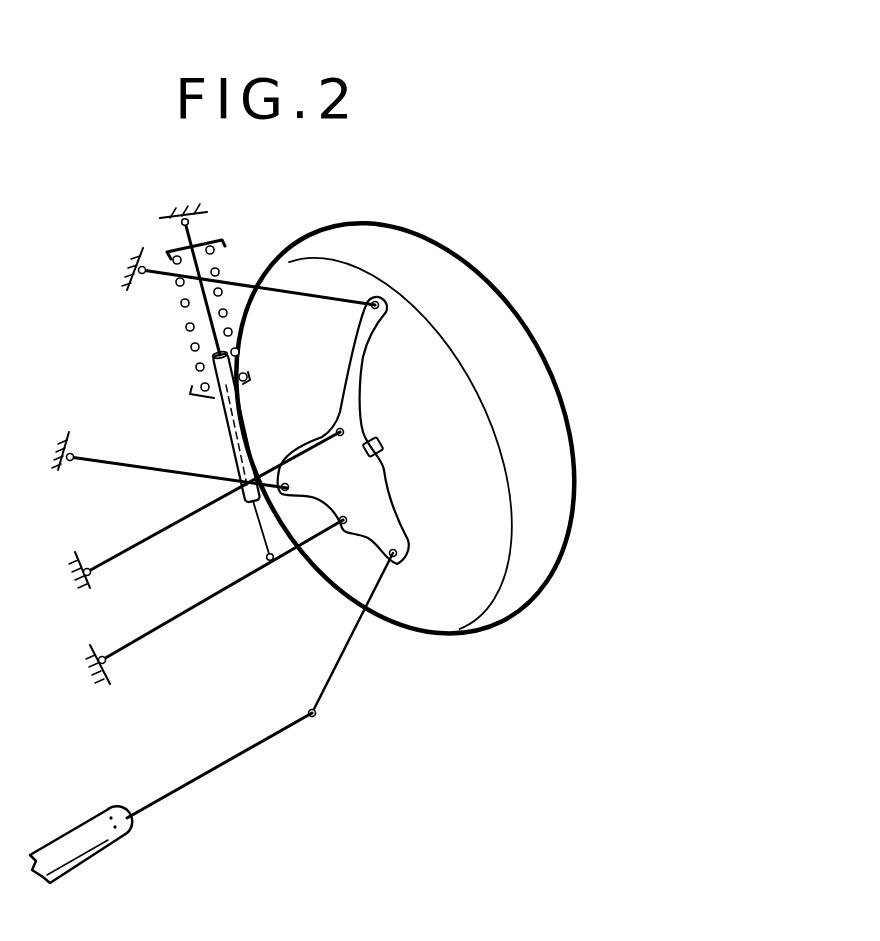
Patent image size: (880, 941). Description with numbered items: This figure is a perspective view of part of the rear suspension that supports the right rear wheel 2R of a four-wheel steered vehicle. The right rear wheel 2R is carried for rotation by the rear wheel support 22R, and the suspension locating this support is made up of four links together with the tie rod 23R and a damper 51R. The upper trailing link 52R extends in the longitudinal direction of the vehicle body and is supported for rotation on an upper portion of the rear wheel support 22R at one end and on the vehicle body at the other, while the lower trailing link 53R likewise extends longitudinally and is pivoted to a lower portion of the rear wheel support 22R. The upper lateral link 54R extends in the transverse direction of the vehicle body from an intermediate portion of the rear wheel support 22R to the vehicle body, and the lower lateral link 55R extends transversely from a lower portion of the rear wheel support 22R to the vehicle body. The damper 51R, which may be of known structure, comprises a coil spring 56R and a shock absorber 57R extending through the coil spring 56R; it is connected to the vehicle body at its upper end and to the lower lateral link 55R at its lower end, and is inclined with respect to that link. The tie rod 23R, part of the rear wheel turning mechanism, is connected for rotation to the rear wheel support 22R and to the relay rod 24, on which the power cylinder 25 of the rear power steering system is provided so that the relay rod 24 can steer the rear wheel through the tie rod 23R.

The right rear wheel 2R is at (467, 290).
The rear wheel support 22R is at (372, 495).
The tie rod 23R is at (338, 672).
The relay rod 24 is at (247, 752).
The power cylinder 25 is at (108, 856).
The damper 51R is at (238, 245).
The upper trailing link 52R is at (307, 292).
The lower trailing link 53R is at (123, 462).
The upper lateral link 54R is at (115, 557).
The lower lateral link 55R is at (178, 617).
The coil spring 56R is at (180, 301).
The shock absorber 57R is at (237, 430).